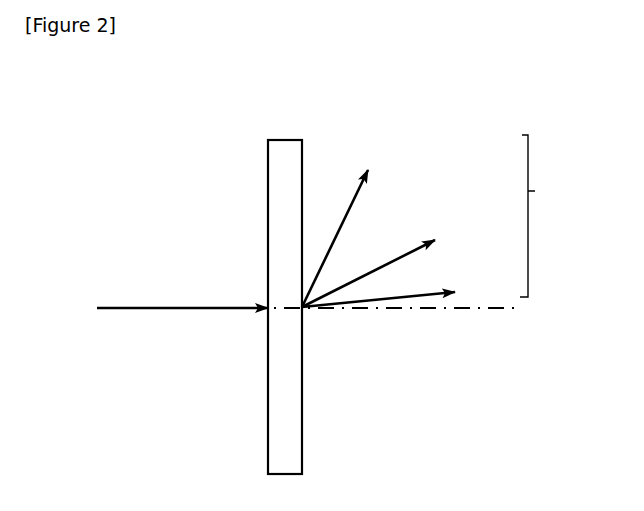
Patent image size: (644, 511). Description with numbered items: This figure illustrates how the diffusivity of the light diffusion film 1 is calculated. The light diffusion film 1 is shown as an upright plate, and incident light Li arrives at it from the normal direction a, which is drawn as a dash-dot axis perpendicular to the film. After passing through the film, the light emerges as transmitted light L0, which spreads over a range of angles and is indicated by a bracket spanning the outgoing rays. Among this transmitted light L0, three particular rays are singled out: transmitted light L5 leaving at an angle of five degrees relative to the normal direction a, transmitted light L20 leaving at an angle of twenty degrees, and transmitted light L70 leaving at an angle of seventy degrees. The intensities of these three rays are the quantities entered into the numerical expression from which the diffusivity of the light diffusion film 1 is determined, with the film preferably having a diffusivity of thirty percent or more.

The light diffusion film 1 is at (287, 133).
The incident light Li is at (160, 310).
The normal direction a is at (416, 308).
The transmitted light to an angle of 70° relative to the normal direction L70 is at (354, 224).
The transmitted light to an angle of 20° relative to the normal direction L20 is at (394, 261).
The transmitted light to an angle of 5° relative to the normal direction L5 is at (401, 293).
The transmitted light L0 is at (552, 216).